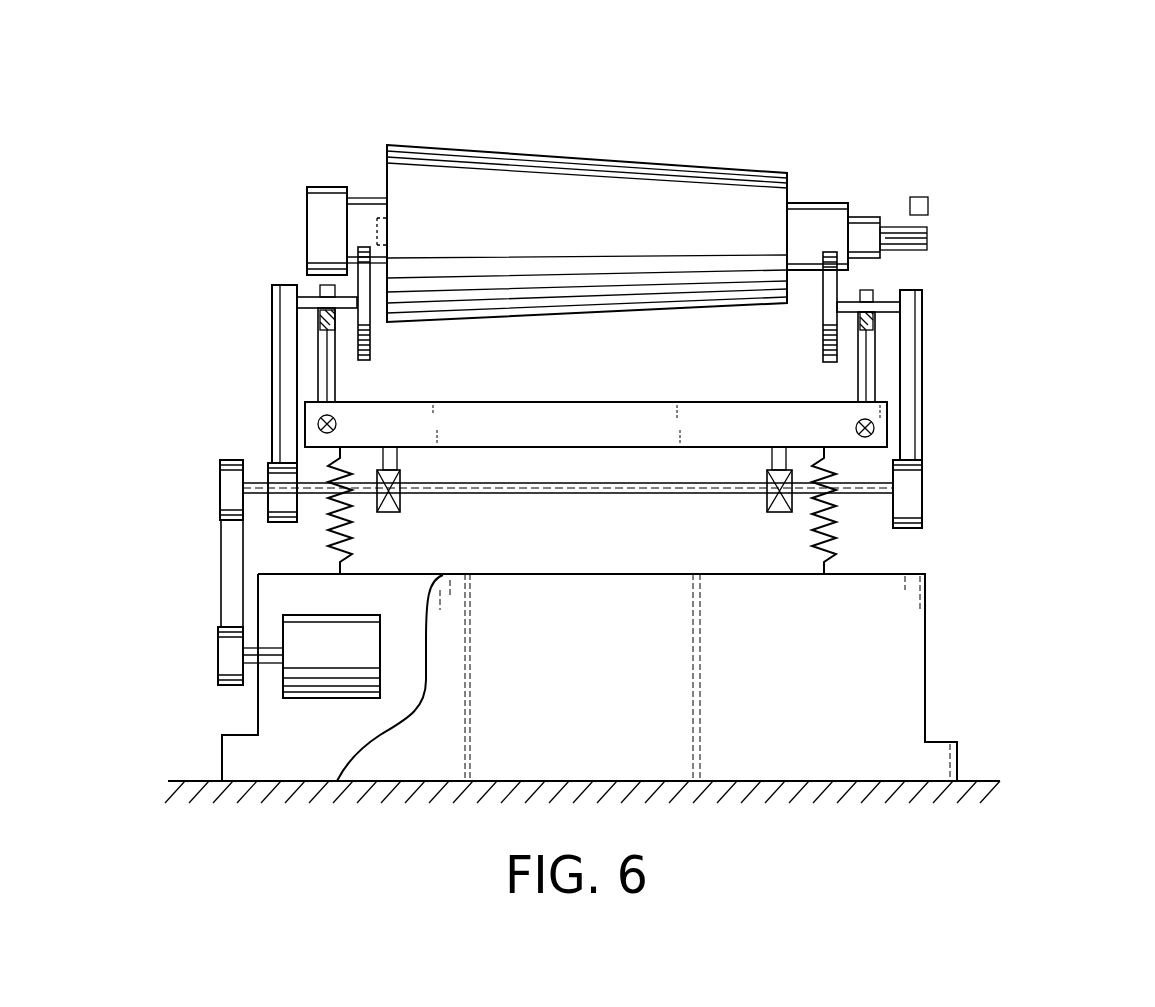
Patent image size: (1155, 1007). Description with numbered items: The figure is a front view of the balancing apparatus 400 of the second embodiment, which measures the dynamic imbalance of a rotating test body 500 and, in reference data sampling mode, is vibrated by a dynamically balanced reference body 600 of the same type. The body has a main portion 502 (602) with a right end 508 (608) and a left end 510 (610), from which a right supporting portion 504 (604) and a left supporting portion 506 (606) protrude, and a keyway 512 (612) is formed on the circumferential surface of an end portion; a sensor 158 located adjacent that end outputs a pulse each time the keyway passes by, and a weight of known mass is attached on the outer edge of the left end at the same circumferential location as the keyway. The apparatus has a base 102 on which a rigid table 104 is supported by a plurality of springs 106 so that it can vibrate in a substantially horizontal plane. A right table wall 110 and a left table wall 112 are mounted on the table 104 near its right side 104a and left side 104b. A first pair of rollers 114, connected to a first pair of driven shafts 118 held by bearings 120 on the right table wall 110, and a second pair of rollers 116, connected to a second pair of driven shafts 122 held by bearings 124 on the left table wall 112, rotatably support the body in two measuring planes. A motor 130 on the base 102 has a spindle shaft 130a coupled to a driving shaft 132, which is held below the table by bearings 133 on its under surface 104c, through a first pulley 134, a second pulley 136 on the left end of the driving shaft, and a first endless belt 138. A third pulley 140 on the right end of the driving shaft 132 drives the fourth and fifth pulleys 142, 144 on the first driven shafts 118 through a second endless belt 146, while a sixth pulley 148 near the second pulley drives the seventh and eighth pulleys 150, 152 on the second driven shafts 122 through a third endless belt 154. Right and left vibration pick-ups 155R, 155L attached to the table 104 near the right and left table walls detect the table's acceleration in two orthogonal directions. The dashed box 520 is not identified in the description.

The balancing apparatus 400 is at (1068, 205).
The test body 500 is at (661, 179).
The reference body 600 is at (661, 179).
The main portion 502 is at (587, 202).
The main portion 602 is at (542, 150).
The left end 510 is at (370, 194).
The left end 610 is at (380, 145).
The left supporting portion 506 is at (325, 201).
The left supporting portion 606 is at (368, 200).
The right end 508 is at (810, 180).
The right end 608 is at (797, 175).
The right supporting portion 504 is at (890, 193).
The right supporting portion 604 is at (837, 203).
The keyway 512 is at (970, 237).
The keyway 612 is at (928, 235).
The reference portion of drum 520 is at (390, 232).
The sensor 158 is at (928, 204).
The base 102 is at (910, 660).
The table 104 is at (595, 418).
The right side of the table 104a is at (892, 418).
The left side of the table 104b is at (302, 408).
The under surface of the table 104c is at (565, 449).
The springs 106 is at (345, 500).
The right table wall 110 is at (860, 387).
The left table wall 112 is at (332, 373).
The first pair of rollers 114 is at (823, 347).
The second pair of rollers 116 is at (370, 338).
The first pair of driven shafts 118 is at (878, 300).
The bearings 120 is at (877, 318).
The second pair of driven shafts 122 is at (313, 297).
The bearings 124 is at (317, 312).
The motor 130 is at (311, 655).
The spindle shaft 130a is at (263, 663).
The driving shaft 132 is at (630, 497).
The bearings 133 is at (405, 503).
The first pulley 134 is at (220, 657).
The second pulley 136 is at (222, 490).
The first endless belt 138 is at (225, 567).
The third pulley 140 is at (923, 498).
The fourth pulley 142 is at (923, 303).
The fifth pulley 144 is at (972, 373).
The second endless belt 146 is at (915, 443).
The sixth pulley 148 is at (307, 505).
The seventh pulley 150 is at (225, 364).
The eighth pulley 152 is at (272, 288).
The third endless belt 154 is at (277, 430).
The left vibration pick-up 155L is at (338, 425).
The right vibration pick-up 155R is at (856, 428).